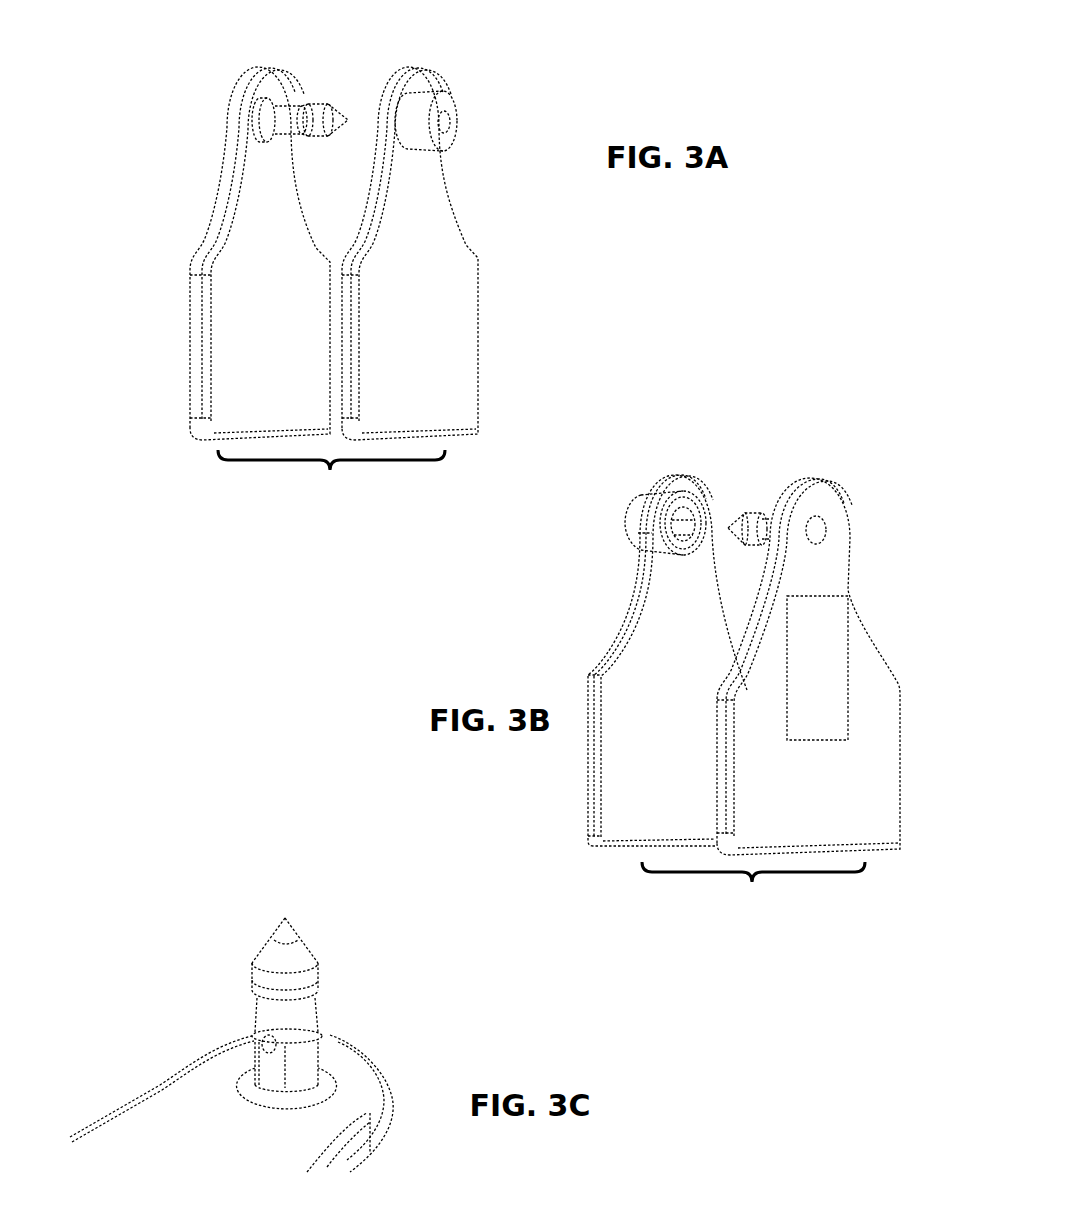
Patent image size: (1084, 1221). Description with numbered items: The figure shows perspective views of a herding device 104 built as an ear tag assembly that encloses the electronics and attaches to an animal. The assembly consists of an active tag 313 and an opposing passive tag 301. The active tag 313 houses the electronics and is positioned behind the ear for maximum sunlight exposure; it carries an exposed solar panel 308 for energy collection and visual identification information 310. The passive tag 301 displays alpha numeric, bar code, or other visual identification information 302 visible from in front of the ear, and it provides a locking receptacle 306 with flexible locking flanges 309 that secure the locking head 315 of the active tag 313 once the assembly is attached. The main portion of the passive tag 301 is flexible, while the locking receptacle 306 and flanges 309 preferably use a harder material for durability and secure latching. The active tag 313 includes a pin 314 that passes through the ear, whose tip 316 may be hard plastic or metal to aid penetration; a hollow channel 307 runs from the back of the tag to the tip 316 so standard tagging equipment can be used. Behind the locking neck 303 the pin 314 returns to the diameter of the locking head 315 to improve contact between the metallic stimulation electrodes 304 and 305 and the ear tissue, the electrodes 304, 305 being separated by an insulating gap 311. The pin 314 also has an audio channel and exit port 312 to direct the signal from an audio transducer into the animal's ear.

In FIG. 3A, the herding device 104 is at (344, 280).
In FIG. 3B, the herding device 104 is at (714, 698).
In FIG. 3A, the passive tag 301 is at (476, 253).
In FIG. 3B, the passive tag 301 is at (639, 642).
In FIG. 3A, the visual identification information 302 is at (485, 372).
In FIG. 3C, the locking neck 303 is at (322, 1010).
In FIG. 3A, the stimulation electrode 304 is at (287, 78).
In FIG. 3C, the stimulation electrode 304 is at (279, 1006).
In FIG. 3C, the stimulation electrode 305 is at (320, 1040).
In FIG. 3A, the locking receptacle 306 is at (456, 97).
In FIG. 3B, the locking receptacle 306 is at (657, 497).
In FIG. 3B, the hollow channel 307 is at (818, 527).
In FIG. 3B, the solar panel 308 is at (822, 623).
In FIG. 3B, the flexible locking flanges 309 is at (690, 528).
In FIG. 3B, the visual identification information 310 is at (832, 822).
In FIG. 3C, the insulating gap 311 is at (265, 1070).
In FIG. 3C, the audio channel and exit port 312 is at (255, 1032).
In FIG. 3A, the active tag 313 is at (197, 320).
In FIG. 3B, the active tag 313 is at (827, 684).
In FIG. 3C, the active tag 313 is at (155, 1093).
In FIG. 3A, the pin 314 is at (296, 98).
In FIG. 3A, the locking head 315 is at (345, 108).
In FIG. 3C, the locking head 315 is at (325, 970).
In FIG. 3C, the tip 316 is at (284, 912).